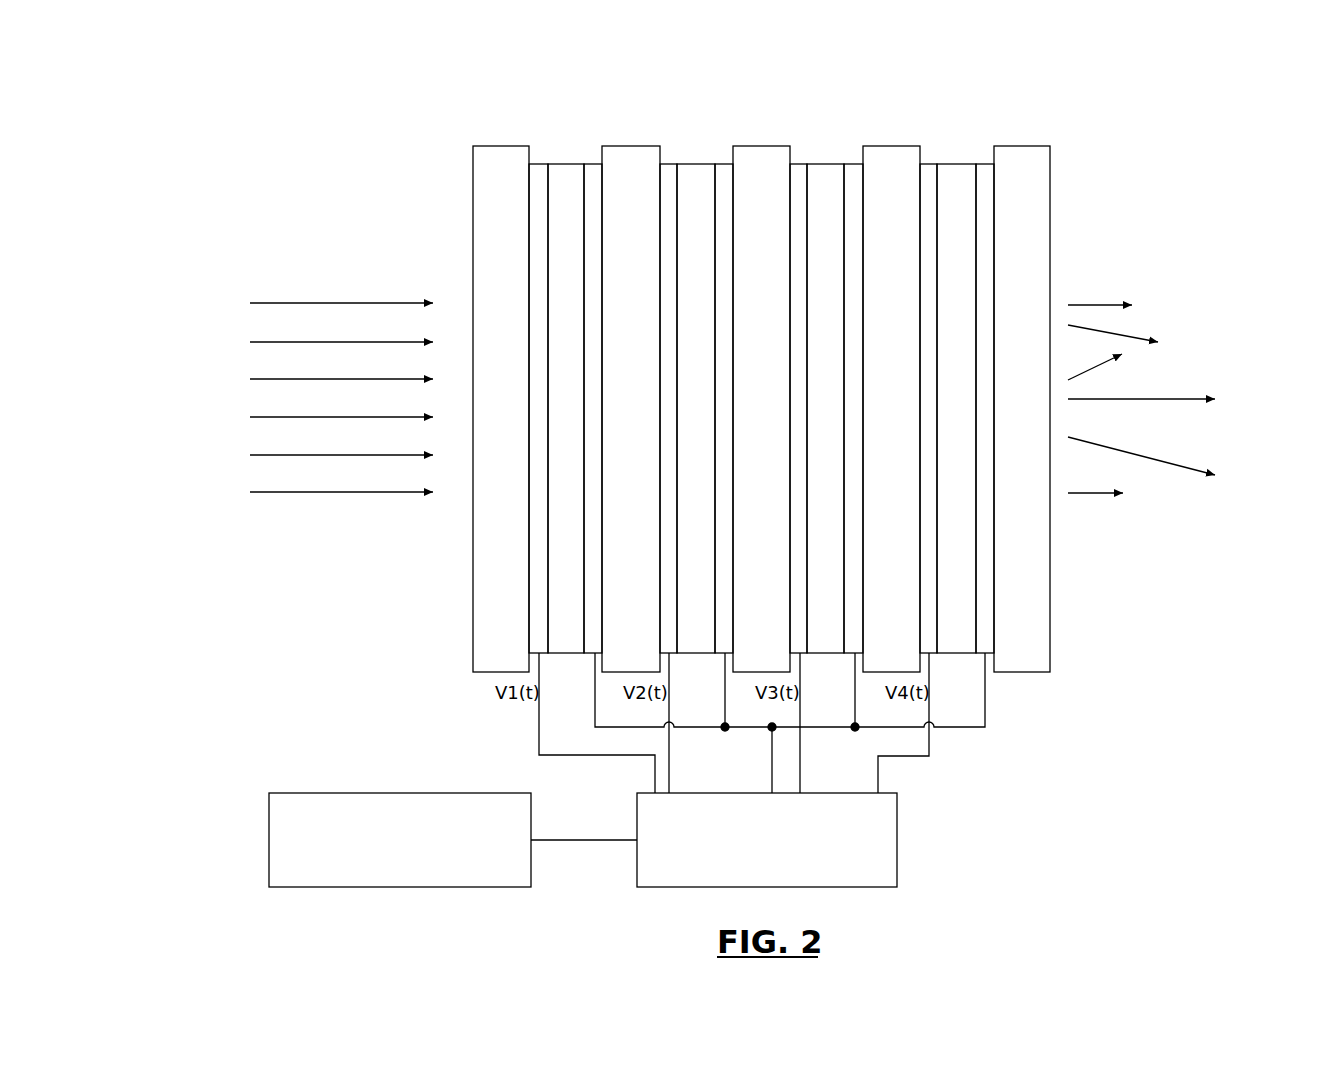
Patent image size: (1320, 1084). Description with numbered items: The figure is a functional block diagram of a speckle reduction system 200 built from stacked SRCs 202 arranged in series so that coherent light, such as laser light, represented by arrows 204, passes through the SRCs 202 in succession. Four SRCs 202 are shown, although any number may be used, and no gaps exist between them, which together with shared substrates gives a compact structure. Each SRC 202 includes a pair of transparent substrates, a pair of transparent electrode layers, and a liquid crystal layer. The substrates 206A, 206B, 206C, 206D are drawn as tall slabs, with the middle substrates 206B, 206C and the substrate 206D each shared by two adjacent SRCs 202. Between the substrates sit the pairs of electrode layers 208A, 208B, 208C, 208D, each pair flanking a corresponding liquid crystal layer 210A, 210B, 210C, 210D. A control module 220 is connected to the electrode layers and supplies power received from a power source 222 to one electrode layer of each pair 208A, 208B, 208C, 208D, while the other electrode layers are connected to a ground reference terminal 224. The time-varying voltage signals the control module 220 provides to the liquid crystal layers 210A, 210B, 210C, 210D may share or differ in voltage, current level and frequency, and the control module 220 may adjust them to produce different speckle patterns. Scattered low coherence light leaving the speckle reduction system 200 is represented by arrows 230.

The speckle reduction system 200 is at (305, 95).
The stacked SRCs 202 is at (465, 677).
The arrows representing coherent light 204 is at (318, 303).
The substrate 206A is at (503, 146).
The substrate 206B is at (630, 146).
The substrate 206C is at (788, 147).
The substrate 206D is at (918, 147).
The pair of electrode layers 208A is at (595, 162).
The pair of electrode layers 208B is at (668, 162).
The pair of electrode layers 208C is at (798, 163).
The pair of electrode layers 208D is at (930, 163).
The liquid crystal layer 210A is at (567, 162).
The liquid crystal layer 210B is at (697, 162).
The liquid crystal layer 210C is at (825, 163).
The liquid crystal layer 210D is at (957, 163).
The control module 220 is at (636, 818).
The power source 222 is at (295, 793).
The ground reference terminal 224 is at (775, 793).
The arrows representing scattered low coherence light 230 is at (1108, 305).